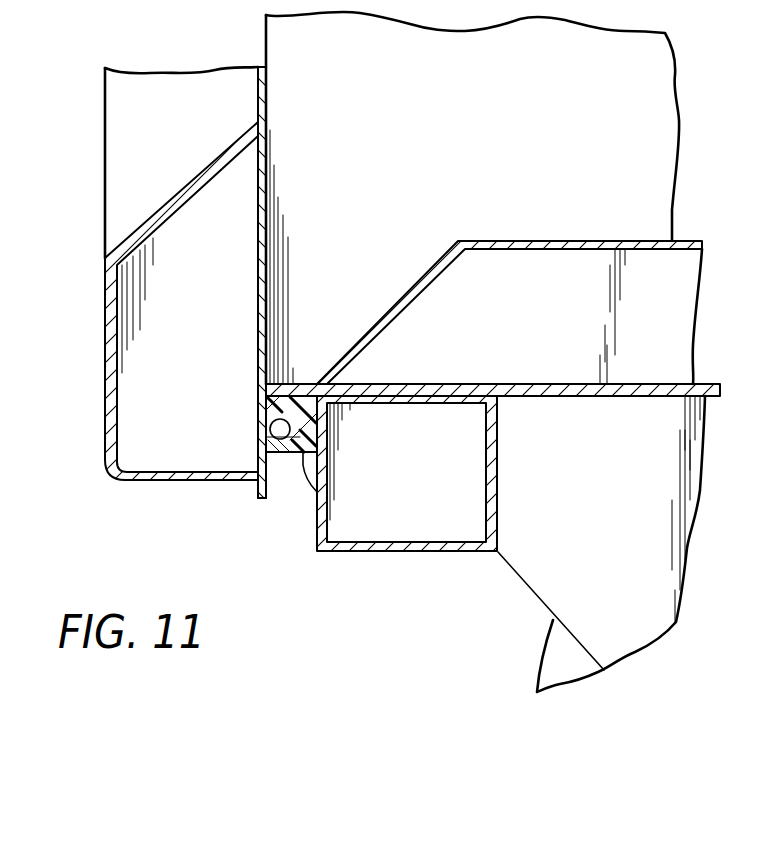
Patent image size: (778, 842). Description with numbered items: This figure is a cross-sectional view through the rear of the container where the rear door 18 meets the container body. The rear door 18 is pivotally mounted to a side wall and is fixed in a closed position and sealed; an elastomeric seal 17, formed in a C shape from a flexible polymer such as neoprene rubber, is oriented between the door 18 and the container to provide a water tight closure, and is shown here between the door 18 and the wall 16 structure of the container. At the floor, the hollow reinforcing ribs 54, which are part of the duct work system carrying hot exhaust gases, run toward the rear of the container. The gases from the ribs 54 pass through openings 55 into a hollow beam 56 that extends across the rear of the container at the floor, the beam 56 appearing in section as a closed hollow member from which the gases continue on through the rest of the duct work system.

The vertical front wall 16 is at (548, 397).
The elastomeric seal 17 is at (303, 440).
The rear door 18 is at (106, 297).
The hollow ribs 54 is at (556, 240).
The openings 55 is at (416, 384).
The hollow beam 56 is at (415, 492).